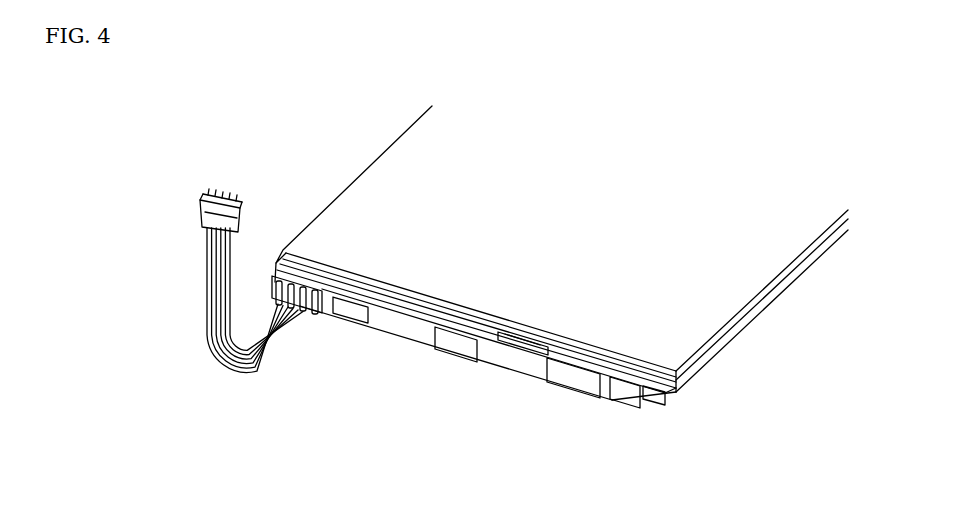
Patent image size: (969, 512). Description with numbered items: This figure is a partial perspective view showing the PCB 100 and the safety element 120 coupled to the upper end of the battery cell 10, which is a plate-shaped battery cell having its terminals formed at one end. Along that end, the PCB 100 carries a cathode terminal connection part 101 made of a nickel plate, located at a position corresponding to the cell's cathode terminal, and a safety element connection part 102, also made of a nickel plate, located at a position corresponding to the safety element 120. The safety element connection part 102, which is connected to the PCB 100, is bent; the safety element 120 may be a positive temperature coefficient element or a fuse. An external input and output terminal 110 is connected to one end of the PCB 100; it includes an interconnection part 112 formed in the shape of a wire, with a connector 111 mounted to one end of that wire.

The battery cell 10 is at (537, 196).
The PCB 100 is at (520, 362).
The cathode terminal connection part 101 is at (440, 297).
The safety element connection part 102 is at (650, 383).
The external input and output terminal 110 is at (107, 210).
The connector 111 is at (200, 203).
The interconnection part 112 is at (209, 250).
The safety element 120 is at (598, 358).